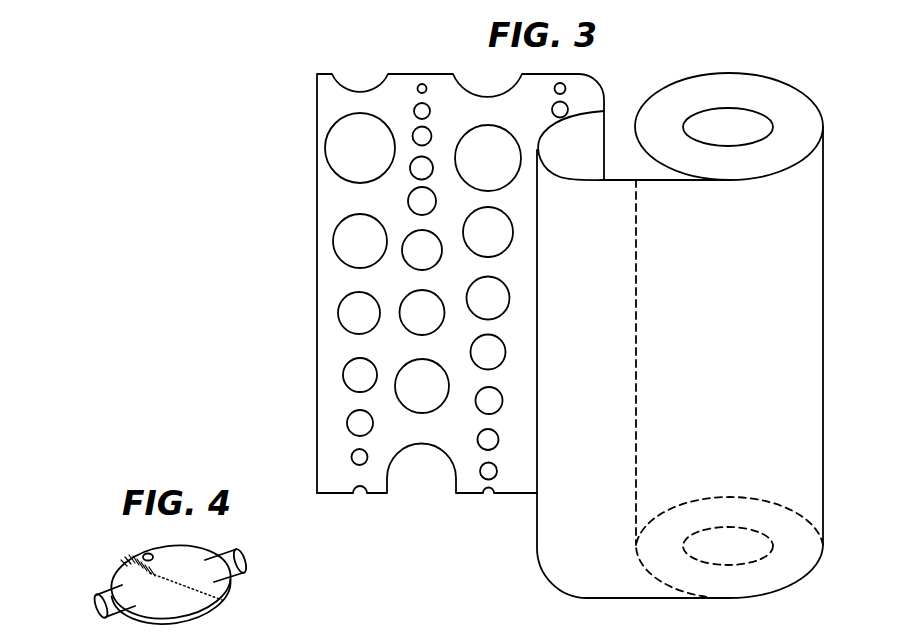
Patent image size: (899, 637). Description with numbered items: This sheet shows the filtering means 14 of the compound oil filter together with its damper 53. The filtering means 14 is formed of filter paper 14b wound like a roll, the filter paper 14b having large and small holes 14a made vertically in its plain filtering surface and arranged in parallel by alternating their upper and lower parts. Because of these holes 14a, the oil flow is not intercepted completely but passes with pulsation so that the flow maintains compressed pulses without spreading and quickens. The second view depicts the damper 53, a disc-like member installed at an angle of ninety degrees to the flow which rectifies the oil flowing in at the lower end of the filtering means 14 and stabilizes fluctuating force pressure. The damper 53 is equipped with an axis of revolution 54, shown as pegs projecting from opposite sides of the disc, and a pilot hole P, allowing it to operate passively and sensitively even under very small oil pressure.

In FIG. 3, the filtering means 14 is at (798, 118).
In FIG. 3, the large and small holes 14a is at (417, 200).
In FIG. 3, the filter paper 14b is at (328, 336).
In FIG. 4, the hole P is at (143, 552).
In FIG. 4, the damper 53 is at (220, 585).
In FIG. 4, the axis of revolution 54 is at (240, 553).